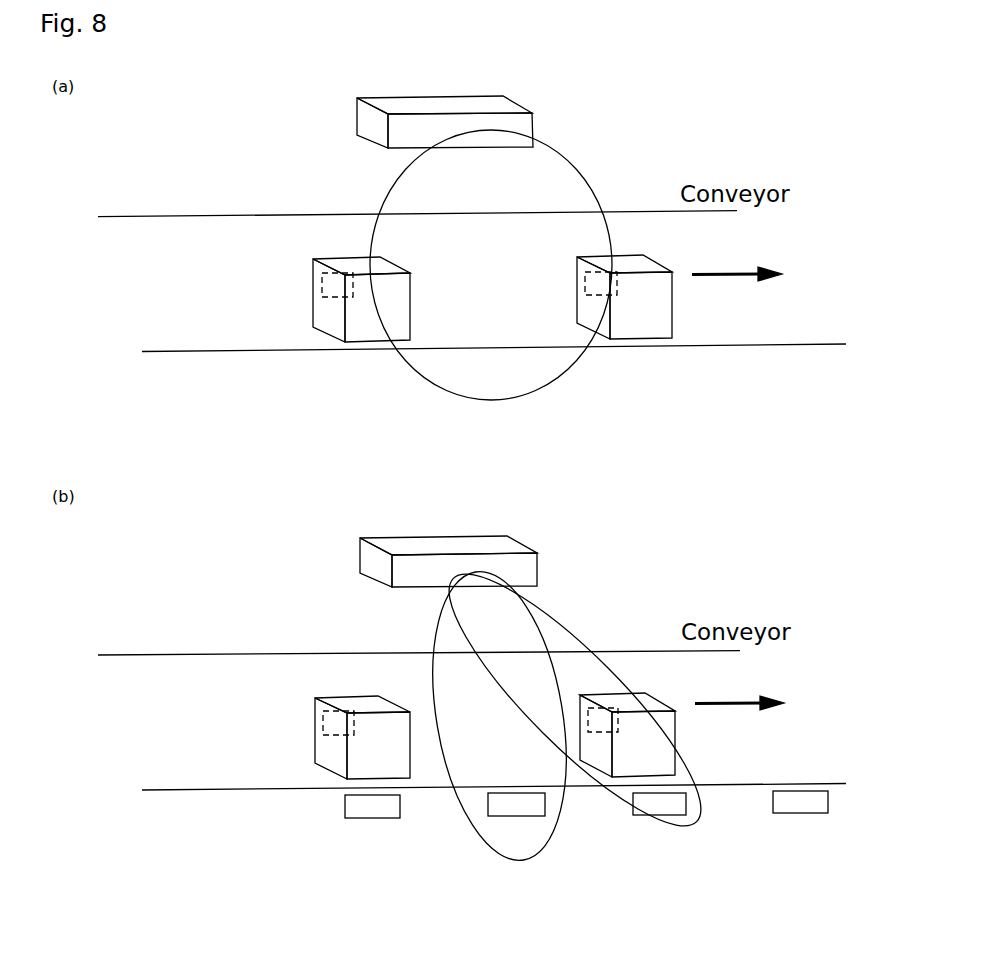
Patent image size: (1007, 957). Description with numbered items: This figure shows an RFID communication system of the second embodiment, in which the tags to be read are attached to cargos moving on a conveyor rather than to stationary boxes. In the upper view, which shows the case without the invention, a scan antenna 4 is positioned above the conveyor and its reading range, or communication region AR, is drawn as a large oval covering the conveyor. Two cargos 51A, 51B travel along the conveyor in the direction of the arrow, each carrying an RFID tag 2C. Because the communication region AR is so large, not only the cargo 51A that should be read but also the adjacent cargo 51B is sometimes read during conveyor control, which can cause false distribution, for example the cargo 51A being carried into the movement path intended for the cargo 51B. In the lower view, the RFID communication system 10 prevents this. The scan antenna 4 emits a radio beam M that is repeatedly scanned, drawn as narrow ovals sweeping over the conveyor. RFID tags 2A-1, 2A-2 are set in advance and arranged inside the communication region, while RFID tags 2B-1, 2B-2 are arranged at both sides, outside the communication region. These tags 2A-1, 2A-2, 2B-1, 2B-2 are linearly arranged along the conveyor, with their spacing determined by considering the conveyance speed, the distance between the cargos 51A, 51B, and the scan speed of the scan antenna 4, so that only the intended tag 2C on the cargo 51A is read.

The scan antenna 4 is at (533, 121).
The reading range (communication region) AR is at (573, 375).
The cargo 51A is at (672, 298).
The cargo 51B is at (322, 312).
The RFID tag 2C is at (322, 283).
The RFID communication system 10 is at (624, 519).
The radio beam M is at (505, 857).
The RFID tag (first RFID tag) 2A-1 is at (505, 817).
The RFID tag (first RFID tag) 2A-2 is at (677, 813).
The RFID tag (second RFID tag) 2B-1 is at (345, 805).
The RFID tag (second RFID tag) 2B-2 is at (792, 813).